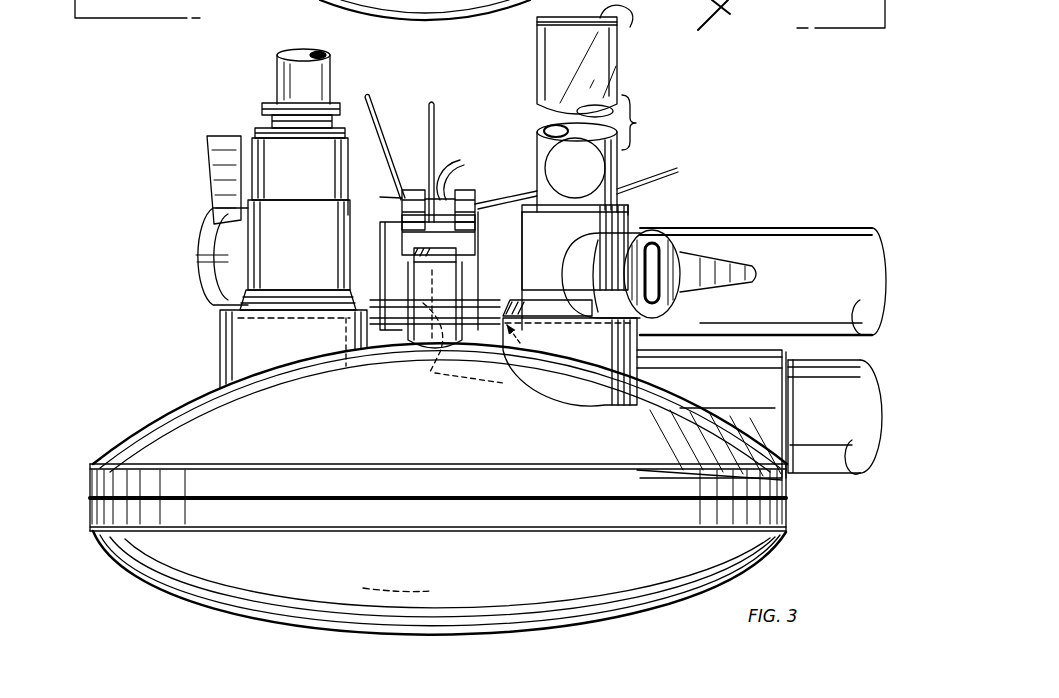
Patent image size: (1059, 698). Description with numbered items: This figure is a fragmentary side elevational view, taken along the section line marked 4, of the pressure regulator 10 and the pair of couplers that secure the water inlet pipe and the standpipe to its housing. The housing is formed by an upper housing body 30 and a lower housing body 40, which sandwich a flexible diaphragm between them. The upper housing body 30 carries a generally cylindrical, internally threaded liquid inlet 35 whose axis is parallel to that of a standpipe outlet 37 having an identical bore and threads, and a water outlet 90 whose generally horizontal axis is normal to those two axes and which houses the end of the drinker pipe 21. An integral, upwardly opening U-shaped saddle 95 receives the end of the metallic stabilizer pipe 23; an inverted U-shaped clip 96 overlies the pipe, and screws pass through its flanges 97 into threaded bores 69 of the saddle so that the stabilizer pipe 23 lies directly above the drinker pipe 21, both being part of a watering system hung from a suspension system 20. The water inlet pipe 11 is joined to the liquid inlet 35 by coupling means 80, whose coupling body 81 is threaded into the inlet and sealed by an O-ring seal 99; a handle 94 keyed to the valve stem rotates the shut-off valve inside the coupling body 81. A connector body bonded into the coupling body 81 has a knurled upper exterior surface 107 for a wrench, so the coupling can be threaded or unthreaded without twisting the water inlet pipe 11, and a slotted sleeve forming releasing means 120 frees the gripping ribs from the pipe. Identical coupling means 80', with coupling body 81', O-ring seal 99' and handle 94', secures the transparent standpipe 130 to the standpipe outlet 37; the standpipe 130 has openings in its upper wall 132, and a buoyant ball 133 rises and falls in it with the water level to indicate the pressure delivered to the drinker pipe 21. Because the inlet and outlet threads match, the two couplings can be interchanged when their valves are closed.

The section line indicator 4 is at (720, 16).
The pressure regulator 10 is at (795, 145).
The water inlet pipe 11 is at (312, 85).
The suspension system 20 is at (440, 112).
The drinker pipe 21 is at (830, 412).
The stabilizer pipe 23 is at (817, 290).
The upper housing body 30 is at (198, 393).
The liquid inlet 35 is at (283, 347).
The standpipe outlet 37 is at (591, 374).
The lower housing body 40 is at (195, 572).
The threaded bores 69 is at (450, 345).
The coupling means 80 is at (365, 204).
The coupling means 80' is at (656, 199).
The coupling body 81 is at (299, 245).
The coupling body 81' is at (575, 247).
The water outlet 90 is at (736, 395).
The handle 94 is at (209, 220).
The handle 94' is at (690, 274).
The saddle 95 is at (499, 291).
The clip 96 is at (462, 238).
The flanges 97 is at (470, 263).
The O-ring seal 99 is at (350, 353).
The O-ring seal 99' is at (527, 341).
The upper exterior surface 107 is at (316, 171).
The releasing means 120 is at (342, 101).
The standpipe 130 is at (624, 83).
The upper wall 132 is at (628, 25).
The ball 133 is at (591, 176).